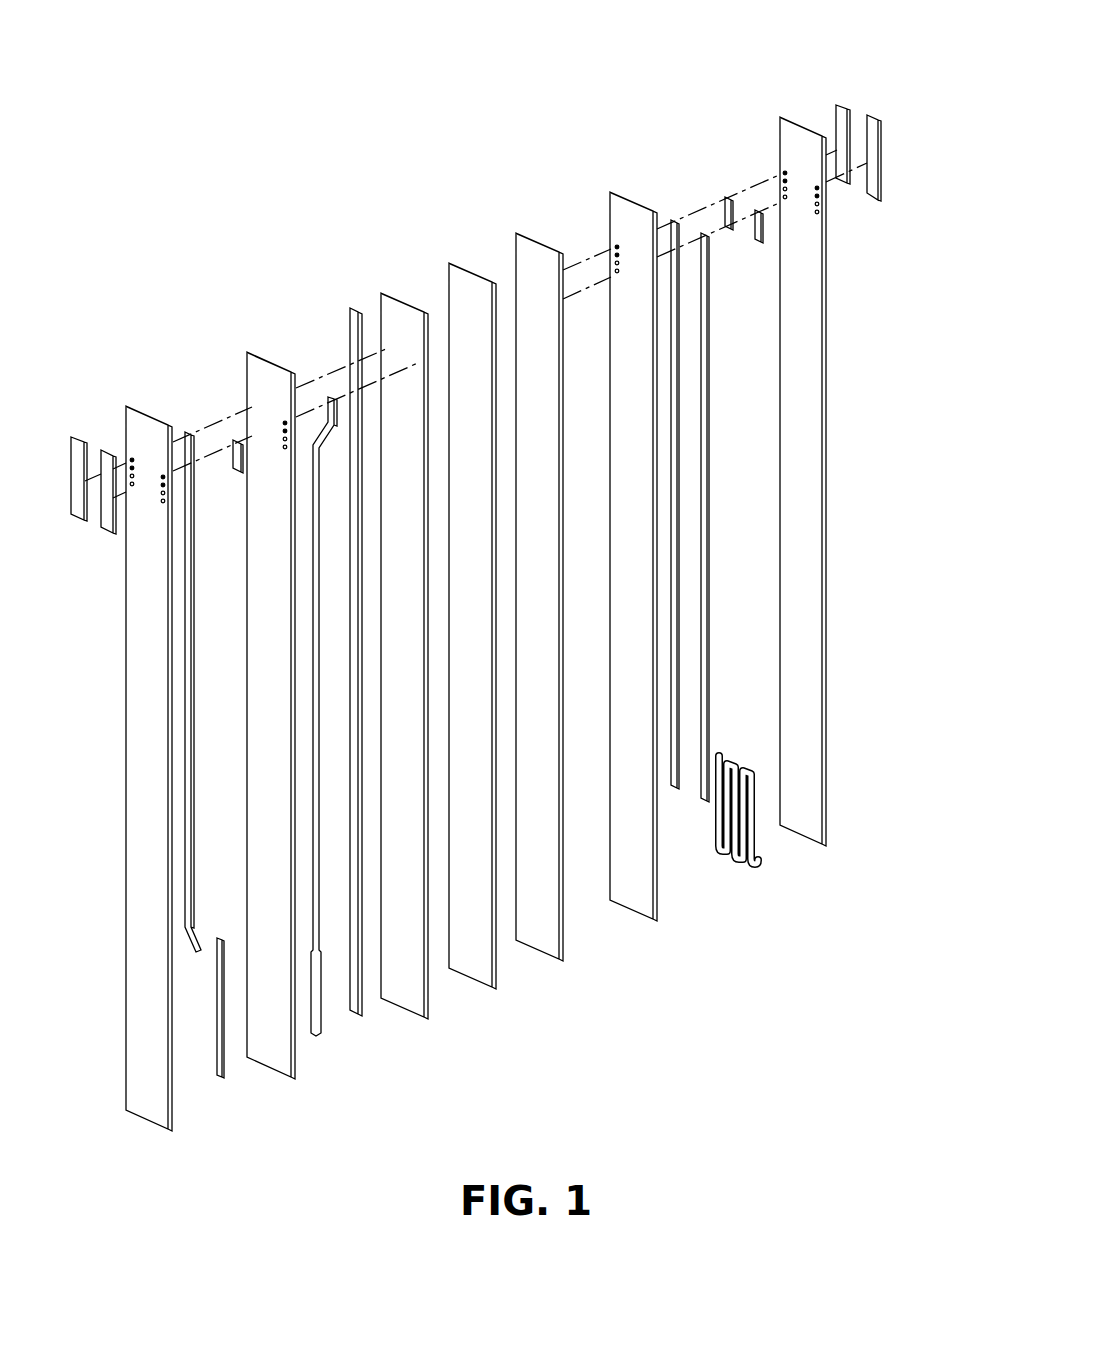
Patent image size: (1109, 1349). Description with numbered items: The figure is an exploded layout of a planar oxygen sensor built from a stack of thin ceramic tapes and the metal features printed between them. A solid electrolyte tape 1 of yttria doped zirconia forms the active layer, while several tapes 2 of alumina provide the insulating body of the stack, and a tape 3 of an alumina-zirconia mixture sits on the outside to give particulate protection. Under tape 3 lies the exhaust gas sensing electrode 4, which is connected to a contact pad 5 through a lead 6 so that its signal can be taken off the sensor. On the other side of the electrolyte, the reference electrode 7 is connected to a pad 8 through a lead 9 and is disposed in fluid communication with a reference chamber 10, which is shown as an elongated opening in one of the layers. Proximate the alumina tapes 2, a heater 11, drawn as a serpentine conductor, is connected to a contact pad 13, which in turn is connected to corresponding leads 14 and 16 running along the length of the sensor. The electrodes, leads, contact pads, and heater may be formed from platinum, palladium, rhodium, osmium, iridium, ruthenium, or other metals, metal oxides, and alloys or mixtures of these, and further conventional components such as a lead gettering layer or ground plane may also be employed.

The solid electrolyte tape 1 is at (271, 361).
The tapes 2 is at (557, 1002).
The tape 3 is at (155, 1130).
The exhaust gas sensing electrode 4 is at (221, 1078).
The contact pad 5 is at (78, 437).
The lead 6 is at (187, 432).
The reference electrode 7 is at (318, 1037).
The pad 8 is at (106, 450).
The lead 9 is at (330, 712).
The reference chamber 10 is at (353, 308).
The heater 11 is at (737, 866).
The contact pad 13 is at (842, 101).
The lead 14 is at (704, 233).
The lead 16 is at (674, 220).